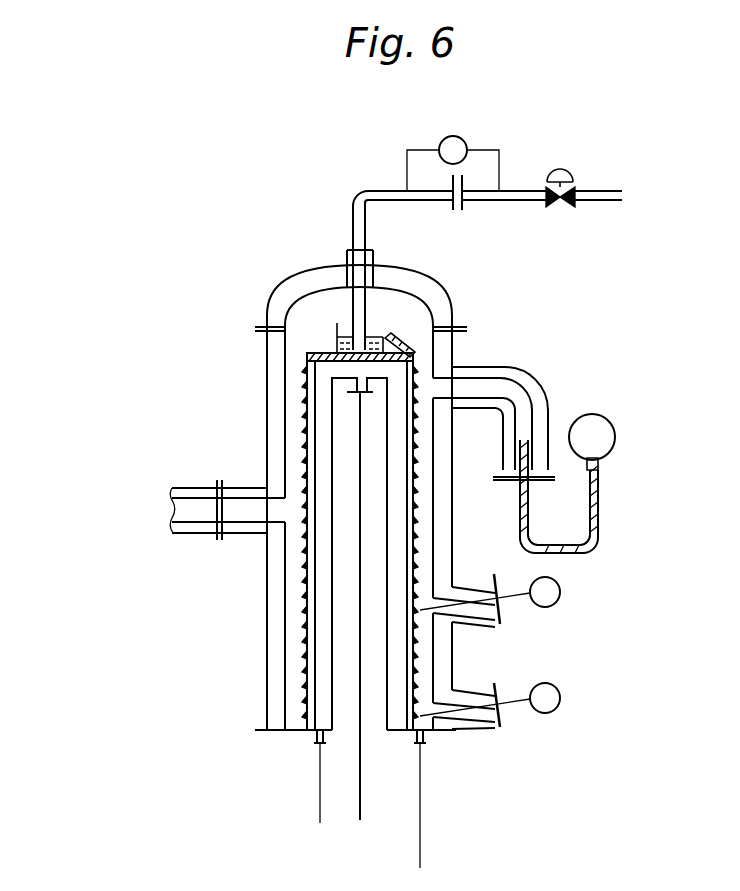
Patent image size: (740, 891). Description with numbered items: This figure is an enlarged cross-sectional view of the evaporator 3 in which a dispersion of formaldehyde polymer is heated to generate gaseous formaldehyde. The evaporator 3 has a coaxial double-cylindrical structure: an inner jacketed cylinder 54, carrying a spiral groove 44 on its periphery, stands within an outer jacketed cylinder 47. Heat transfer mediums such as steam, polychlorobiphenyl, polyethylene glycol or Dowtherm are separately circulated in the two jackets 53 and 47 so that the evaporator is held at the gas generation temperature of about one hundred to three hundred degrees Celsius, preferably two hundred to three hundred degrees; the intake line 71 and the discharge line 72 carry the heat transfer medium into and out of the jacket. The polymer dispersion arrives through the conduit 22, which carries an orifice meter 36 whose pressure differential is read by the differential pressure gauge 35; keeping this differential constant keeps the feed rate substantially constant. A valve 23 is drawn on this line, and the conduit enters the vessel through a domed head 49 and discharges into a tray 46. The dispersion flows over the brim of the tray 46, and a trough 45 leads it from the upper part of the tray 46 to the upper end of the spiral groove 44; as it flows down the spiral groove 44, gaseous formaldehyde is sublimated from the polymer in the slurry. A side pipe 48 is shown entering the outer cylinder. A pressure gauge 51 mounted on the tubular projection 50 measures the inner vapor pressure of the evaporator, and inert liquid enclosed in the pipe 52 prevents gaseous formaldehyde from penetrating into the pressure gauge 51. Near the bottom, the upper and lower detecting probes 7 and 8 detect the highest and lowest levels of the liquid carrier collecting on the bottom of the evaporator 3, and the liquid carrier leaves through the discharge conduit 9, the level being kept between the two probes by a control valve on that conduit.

The evaporator 3 is at (268, 303).
The upper detecting probe 7 is at (560, 594).
The lower detecting probe 8 is at (560, 700).
The discharge conduit 9 is at (422, 858).
The conduit 22 is at (620, 191).
The valve 23 is at (560, 207).
The differential pressure gauge 35 is at (466, 143).
The orifice meter 36 is at (463, 205).
The spiral groove 44 is at (307, 642).
The trough 45 is at (398, 340).
The tray 46 is at (337, 333).
The outer jacketed cylinder 47 is at (270, 733).
The jacketed inlet pipe 48 is at (192, 488).
The dome head 49 is at (295, 280).
The tubular projection 50 is at (522, 370).
The pressure gauge 51 is at (617, 434).
The pipe 52 is at (598, 522).
The jacket 53 is at (318, 494).
The inner jacketed cylinder 54 is at (307, 592).
The intake line 71 is at (322, 815).
The discharge line 72 is at (362, 808).